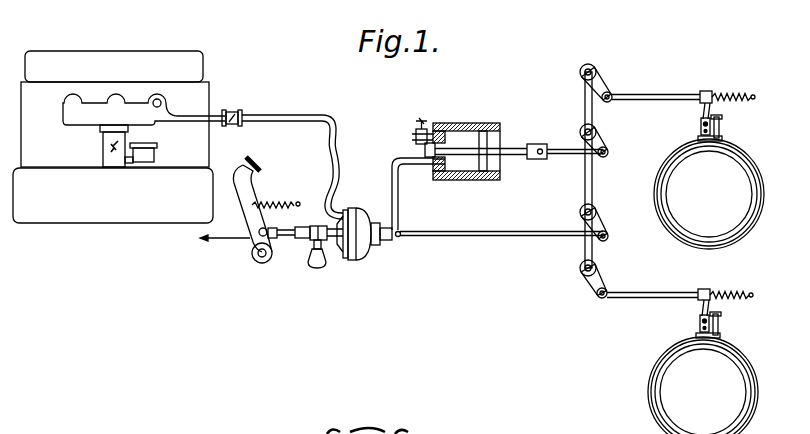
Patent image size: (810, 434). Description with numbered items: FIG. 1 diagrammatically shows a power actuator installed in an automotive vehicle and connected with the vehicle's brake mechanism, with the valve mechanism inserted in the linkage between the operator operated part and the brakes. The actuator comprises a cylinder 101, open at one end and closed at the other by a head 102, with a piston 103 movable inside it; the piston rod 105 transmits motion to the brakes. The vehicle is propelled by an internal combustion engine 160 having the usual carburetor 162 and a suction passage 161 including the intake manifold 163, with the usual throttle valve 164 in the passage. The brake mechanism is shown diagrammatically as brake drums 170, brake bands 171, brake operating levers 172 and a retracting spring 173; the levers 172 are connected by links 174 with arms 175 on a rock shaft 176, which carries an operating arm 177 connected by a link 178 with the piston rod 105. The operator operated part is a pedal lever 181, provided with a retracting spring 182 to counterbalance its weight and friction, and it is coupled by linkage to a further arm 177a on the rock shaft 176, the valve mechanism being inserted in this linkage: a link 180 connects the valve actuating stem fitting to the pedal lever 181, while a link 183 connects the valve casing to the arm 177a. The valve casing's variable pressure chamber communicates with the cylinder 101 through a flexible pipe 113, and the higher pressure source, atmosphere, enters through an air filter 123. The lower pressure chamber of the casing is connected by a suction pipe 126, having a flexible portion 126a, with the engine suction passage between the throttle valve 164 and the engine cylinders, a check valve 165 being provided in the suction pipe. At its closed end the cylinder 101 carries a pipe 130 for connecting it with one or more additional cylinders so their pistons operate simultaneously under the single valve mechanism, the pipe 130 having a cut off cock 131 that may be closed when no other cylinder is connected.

The cylinder 101 is at (473, 124).
The head 102 is at (442, 180).
The piston 103 is at (487, 140).
The piston rod 105 is at (516, 157).
The flexible pipe 113 is at (399, 201).
The air filter 123 is at (317, 268).
The suction pipe 126 is at (292, 115).
The flexible portion 126a is at (333, 147).
The pipe 130 is at (438, 124).
The cut off cock 131 is at (421, 125).
The internal combustion engine 160 is at (199, 70).
The suction passage 161 is at (103, 150).
The carburetor 162 is at (154, 150).
The intake manifold 163 is at (73, 94).
The throttle valve 164 is at (110, 172).
The check valve 165 is at (237, 113).
The brake drums 170 is at (672, 208).
The brake bands 171 is at (671, 237).
The brake operating levers 172 is at (706, 113).
The retracting spring 173 is at (731, 96).
The links 174 is at (664, 95).
The arms 175 is at (601, 83).
The rock shaft 176 is at (593, 115).
The operating arm 177 is at (606, 144).
The arm 177a is at (601, 224).
The link 178 is at (567, 154).
The link 180 is at (258, 264).
The pedal lever 181 is at (248, 186).
The retracting spring 182 is at (284, 204).
The link 183 is at (490, 236).